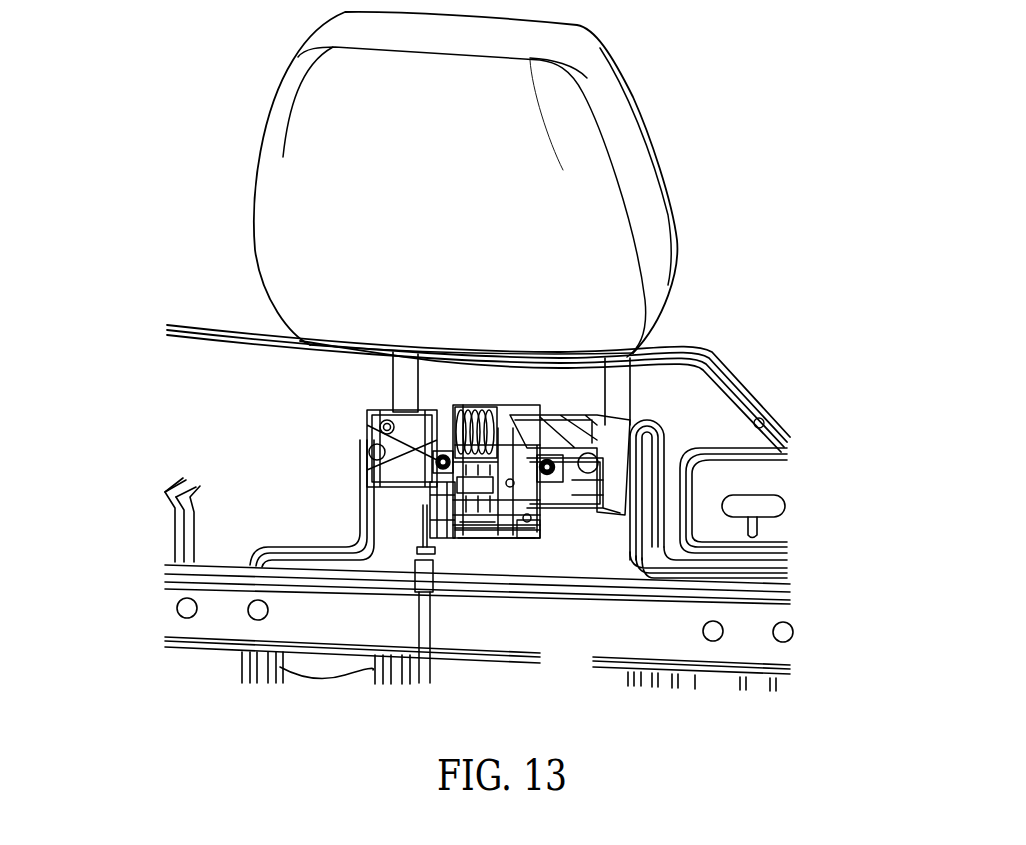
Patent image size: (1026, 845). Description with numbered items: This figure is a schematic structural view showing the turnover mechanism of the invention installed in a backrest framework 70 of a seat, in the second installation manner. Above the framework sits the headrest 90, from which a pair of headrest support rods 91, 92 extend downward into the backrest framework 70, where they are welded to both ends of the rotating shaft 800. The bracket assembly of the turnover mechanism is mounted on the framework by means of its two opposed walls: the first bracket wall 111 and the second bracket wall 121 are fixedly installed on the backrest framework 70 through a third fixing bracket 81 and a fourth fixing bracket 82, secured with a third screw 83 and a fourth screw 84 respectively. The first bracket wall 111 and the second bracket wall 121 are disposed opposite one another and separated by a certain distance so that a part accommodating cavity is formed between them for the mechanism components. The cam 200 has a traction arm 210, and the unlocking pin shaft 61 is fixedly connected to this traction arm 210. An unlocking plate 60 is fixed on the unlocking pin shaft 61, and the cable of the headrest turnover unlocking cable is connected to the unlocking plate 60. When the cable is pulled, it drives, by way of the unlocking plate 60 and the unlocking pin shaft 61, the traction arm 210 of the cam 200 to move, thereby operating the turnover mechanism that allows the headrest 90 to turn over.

The headrest 90 is at (653, 213).
The headrest support rod 91 is at (405, 375).
The headrest support rod 92 is at (663, 352).
The backrest framework 70 is at (693, 373).
The rotating shaft 800 is at (545, 430).
The third fixing bracket 81 is at (445, 450).
The fourth fixing bracket 82 is at (547, 453).
The third screw 83 is at (433, 467).
The fourth screw 84 is at (563, 477).
The unlocking plate 60 is at (420, 495).
The unlocking pin shaft 61 is at (437, 505).
The first bracket wall 111 is at (453, 537).
The cam 200 is at (495, 625).
The traction arm 210 is at (503, 533).
The second bracket wall 121 is at (518, 533).